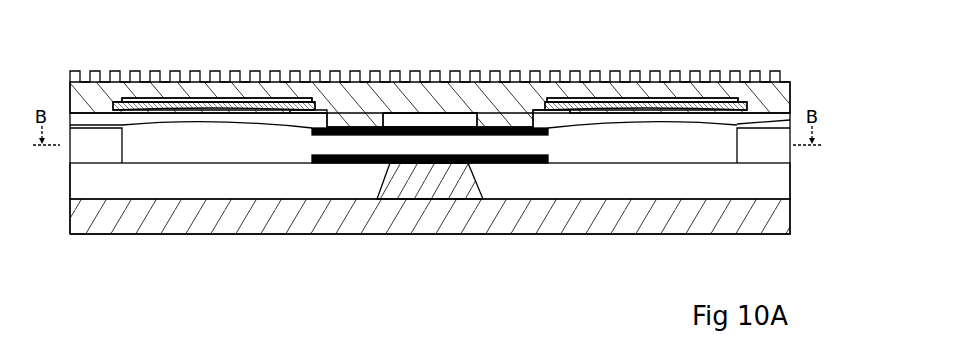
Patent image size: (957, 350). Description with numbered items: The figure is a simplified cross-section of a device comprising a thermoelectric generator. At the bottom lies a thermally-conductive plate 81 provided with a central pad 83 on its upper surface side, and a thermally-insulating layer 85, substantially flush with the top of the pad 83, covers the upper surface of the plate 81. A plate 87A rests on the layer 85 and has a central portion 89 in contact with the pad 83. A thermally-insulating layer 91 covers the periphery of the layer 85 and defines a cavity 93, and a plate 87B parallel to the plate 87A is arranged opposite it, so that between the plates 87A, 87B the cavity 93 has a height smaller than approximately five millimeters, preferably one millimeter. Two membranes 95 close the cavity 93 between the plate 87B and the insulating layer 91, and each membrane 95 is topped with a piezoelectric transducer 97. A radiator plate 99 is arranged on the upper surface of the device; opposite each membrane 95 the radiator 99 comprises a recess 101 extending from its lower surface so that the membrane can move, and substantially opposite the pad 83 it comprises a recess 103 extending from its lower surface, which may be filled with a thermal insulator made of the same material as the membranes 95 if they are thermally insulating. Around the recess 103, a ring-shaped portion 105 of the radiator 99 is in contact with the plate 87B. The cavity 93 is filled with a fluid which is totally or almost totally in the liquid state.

The thermally-conductive plate 81 is at (794, 222).
The central pad 83 is at (408, 202).
The thermally-insulating layer 85 is at (786, 178).
The plate 87A is at (530, 171).
The plate 87B is at (555, 135).
The central portion 89 is at (437, 165).
The thermally-insulating layer 91 is at (782, 150).
The cavity 93 is at (637, 148).
The membrane 95 is at (72, 125).
The piezoelectric transducer 97 is at (221, 103).
The radiator plate 99 is at (795, 84).
The recess 101 is at (118, 98).
The recess 103 is at (426, 120).
The ring-shaped portion 105 is at (353, 122).